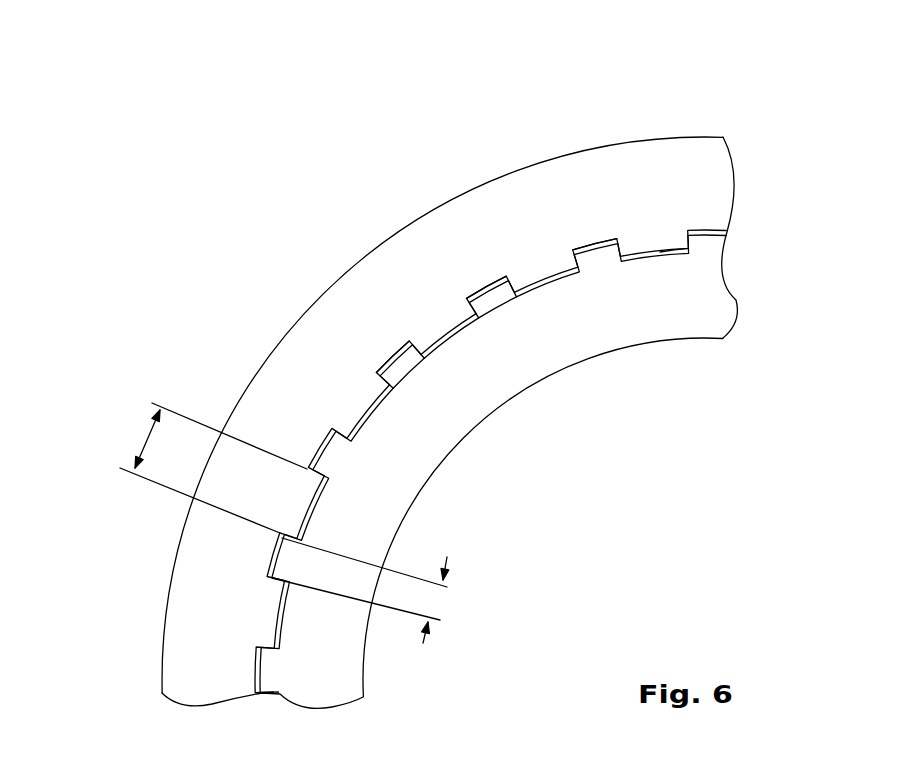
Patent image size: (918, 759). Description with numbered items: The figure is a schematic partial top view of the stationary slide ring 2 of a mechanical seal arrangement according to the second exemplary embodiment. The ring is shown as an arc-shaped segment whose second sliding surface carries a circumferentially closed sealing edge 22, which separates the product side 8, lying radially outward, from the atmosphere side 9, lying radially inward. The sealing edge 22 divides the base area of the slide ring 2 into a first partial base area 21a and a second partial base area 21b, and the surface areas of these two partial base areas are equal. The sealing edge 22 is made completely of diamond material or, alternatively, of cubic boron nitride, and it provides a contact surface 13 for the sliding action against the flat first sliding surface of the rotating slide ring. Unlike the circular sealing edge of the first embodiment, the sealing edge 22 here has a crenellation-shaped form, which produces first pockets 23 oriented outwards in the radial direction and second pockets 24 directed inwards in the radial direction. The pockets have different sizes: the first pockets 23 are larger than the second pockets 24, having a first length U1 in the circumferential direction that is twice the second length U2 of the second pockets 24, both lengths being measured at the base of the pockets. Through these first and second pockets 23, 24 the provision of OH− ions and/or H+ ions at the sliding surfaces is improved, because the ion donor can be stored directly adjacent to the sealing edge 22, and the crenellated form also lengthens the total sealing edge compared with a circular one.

The stationary slide ring 2 is at (193, 333).
The product side 8 is at (254, 244).
The atmosphere side 9 is at (553, 505).
The contact surface 13 is at (681, 240).
The first partial base area 21a is at (635, 330).
The second partial base area 21b is at (685, 150).
The sealing edge 22 is at (490, 288).
The first pockets 23 is at (440, 327).
The second pockets 24 is at (500, 305).
The first length U1 is at (145, 442).
The second length U2 is at (437, 603).